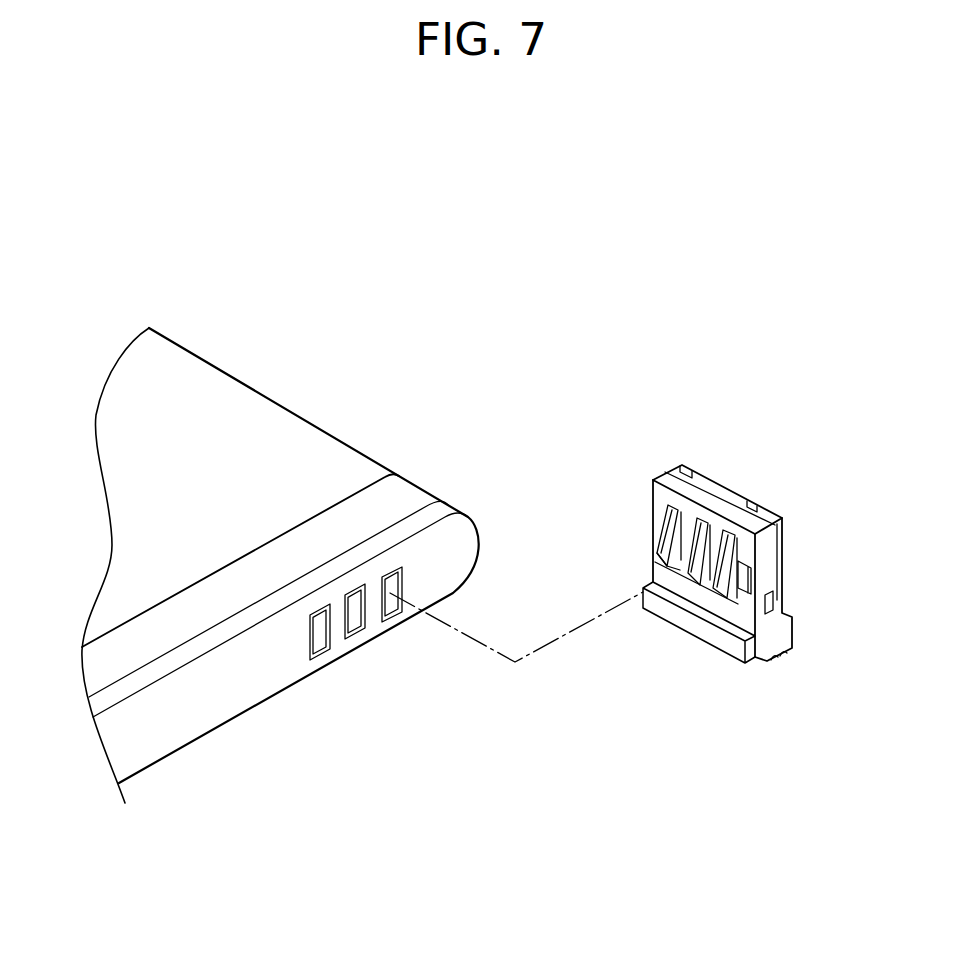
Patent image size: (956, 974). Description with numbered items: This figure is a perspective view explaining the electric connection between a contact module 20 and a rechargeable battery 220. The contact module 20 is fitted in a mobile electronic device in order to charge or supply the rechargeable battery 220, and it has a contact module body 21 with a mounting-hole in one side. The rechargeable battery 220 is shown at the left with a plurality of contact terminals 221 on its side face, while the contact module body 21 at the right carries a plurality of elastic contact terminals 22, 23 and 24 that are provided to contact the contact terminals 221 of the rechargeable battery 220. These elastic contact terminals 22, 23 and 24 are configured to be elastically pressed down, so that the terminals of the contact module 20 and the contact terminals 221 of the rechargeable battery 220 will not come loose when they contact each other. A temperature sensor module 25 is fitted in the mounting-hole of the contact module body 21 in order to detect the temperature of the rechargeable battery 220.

The contact module 20 is at (716, 506).
The contact module body 21 is at (772, 555).
The elastic contact terminal 22 is at (780, 515).
The elastic contact terminal 23 is at (705, 518).
The elastic contact terminal 24 is at (667, 542).
The temperature sensor module 25 is at (746, 603).
The rechargeable battery 220 is at (290, 428).
The contact terminals 221 is at (318, 638).